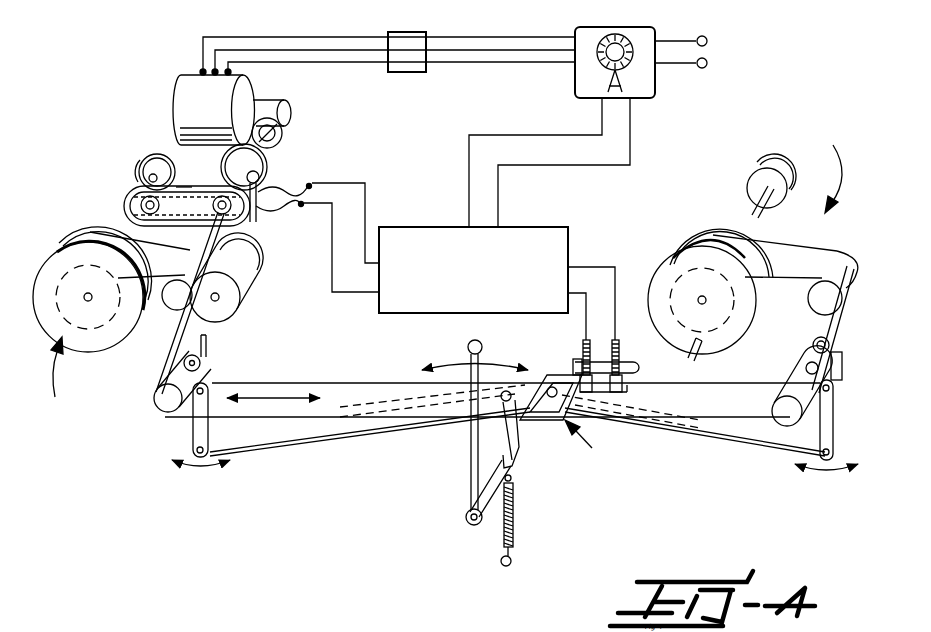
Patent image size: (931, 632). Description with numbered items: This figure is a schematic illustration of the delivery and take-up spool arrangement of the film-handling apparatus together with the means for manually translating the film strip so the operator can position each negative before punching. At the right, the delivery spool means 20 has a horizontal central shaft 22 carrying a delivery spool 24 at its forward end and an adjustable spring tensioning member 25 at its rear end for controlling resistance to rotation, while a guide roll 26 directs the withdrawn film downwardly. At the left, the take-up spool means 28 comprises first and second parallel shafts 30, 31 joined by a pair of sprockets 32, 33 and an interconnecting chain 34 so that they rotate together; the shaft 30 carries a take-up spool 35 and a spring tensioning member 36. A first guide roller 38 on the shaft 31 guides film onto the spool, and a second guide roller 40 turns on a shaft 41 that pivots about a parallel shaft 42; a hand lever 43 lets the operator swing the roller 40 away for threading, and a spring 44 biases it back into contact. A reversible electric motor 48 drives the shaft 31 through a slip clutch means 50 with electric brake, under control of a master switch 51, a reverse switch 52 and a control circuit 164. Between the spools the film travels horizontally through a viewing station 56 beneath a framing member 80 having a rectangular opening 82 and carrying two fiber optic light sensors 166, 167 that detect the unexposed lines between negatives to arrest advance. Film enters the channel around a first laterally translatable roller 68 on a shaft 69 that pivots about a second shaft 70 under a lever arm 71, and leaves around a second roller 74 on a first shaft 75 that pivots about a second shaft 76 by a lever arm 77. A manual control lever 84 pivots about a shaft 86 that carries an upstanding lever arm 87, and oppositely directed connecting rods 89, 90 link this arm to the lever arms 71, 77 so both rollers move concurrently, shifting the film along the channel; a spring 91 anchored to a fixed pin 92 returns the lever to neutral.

The delivery spool means 20 is at (766, 239).
The central shaft 22 is at (752, 190).
The delivery spool 24 is at (672, 250).
The adjustable spring tensioning member 25 is at (750, 165).
The guide roll 26 is at (842, 300).
The take-up spool means 28 is at (55, 383).
The first shaft 30 is at (140, 165).
The second shaft 31 is at (264, 140).
The sprocket 32 is at (126, 192).
The sprocket 33 is at (213, 206).
The chain 34 is at (175, 184).
The take-up spool 35 is at (100, 339).
The adjustable spring tensioning member 36 is at (144, 170).
The first guide roller 38 is at (180, 307).
The second guide roller 40 is at (242, 292).
The shaft 41 is at (262, 260).
The parallel shaft 42 is at (270, 238).
The hand lever 43 is at (262, 178).
The spring 44 is at (170, 256).
The reversible electric motor 48 is at (187, 76).
The clutch means 50 is at (270, 163).
The master switch 51 is at (558, 81).
The reverse switch 52 is at (430, 72).
The viewing station 56 is at (492, 417).
The first laterally translatable roller 68 is at (787, 428).
The shaft 69 is at (815, 346).
The second shaft 70 is at (842, 364).
The lever arm 71 is at (834, 418).
The second roller 74 is at (168, 412).
The first shaft 75 is at (208, 343).
The second shaft 76 is at (205, 368).
The lever arm 77 is at (192, 445).
The framing member 80 is at (545, 422).
The rectangular opening 82 is at (544, 380).
The control lever 84 is at (468, 346).
The shaft 86 is at (490, 480).
The lever arm 87 is at (500, 433).
The connecting rod 89 is at (713, 432).
The connecting rod 90 is at (303, 440).
The spring 91 is at (514, 510).
The fixed pin 92 is at (513, 556).
The control circuit 164 is at (570, 210).
The fiber optic light sensor 166 is at (578, 376).
The fiber optic light sensor 167 is at (632, 390).